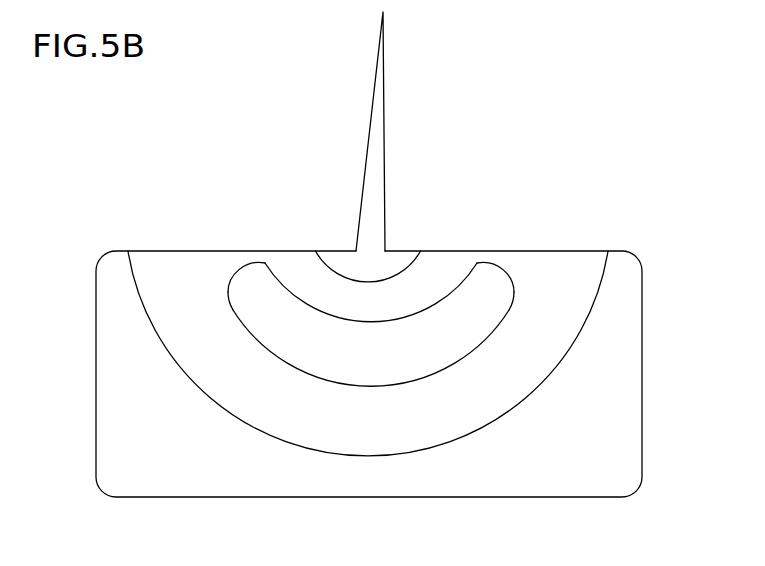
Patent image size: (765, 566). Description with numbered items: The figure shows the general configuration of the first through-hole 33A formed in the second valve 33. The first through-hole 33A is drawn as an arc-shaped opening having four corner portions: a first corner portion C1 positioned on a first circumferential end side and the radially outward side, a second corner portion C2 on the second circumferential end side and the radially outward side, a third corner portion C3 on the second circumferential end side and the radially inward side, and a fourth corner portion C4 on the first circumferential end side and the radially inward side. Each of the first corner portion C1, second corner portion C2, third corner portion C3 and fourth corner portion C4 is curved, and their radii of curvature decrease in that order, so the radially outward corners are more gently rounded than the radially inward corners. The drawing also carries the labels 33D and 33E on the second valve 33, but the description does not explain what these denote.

The second valve 33 is at (618, 221).
The first through-hole 33A is at (448, 342).
The recess 33D is at (323, 288).
The arc-shaped edge 33E is at (368, 442).
The first corner portion C1 is at (230, 304).
The second corner portion C2 is at (512, 304).
The third corner portion C3 is at (467, 259).
The fourth corner portion C4 is at (264, 262).